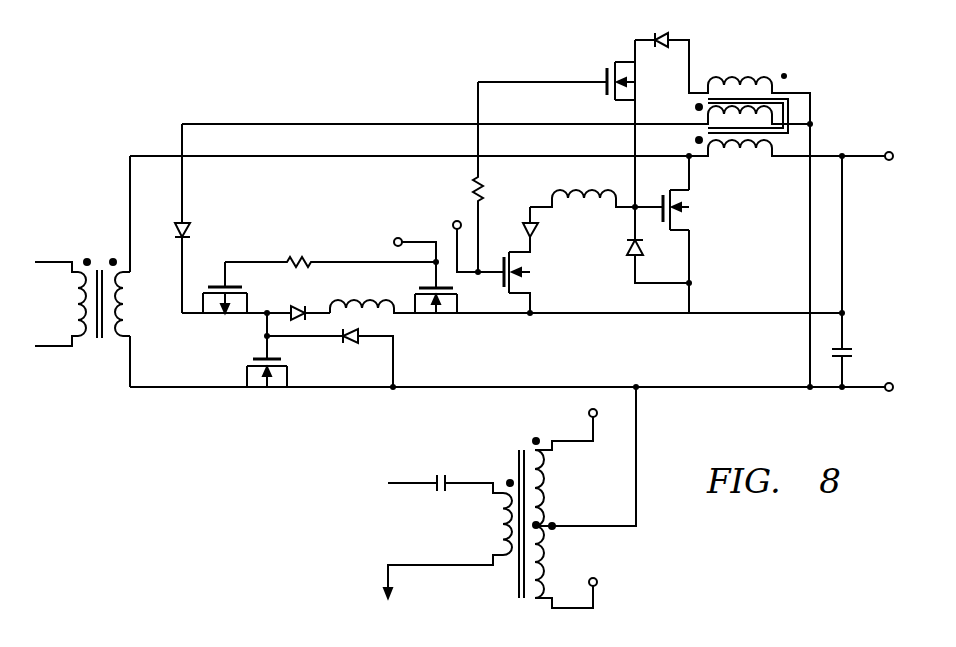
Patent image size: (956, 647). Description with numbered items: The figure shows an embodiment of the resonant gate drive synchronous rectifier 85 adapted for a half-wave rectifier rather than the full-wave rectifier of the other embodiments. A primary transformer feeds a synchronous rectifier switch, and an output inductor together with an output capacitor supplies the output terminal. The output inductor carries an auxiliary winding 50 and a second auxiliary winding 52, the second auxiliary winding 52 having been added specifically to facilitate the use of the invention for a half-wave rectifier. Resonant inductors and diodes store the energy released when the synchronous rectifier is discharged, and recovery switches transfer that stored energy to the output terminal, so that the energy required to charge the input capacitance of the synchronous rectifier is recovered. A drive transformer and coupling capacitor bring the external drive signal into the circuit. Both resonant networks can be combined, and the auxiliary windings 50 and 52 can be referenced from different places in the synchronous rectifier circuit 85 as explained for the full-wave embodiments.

The auxiliary winding 50 is at (779, 118).
The second auxiliary winding 52 is at (779, 153).
The resonant gate drive synchronous rectifier 85 is at (466, 309).